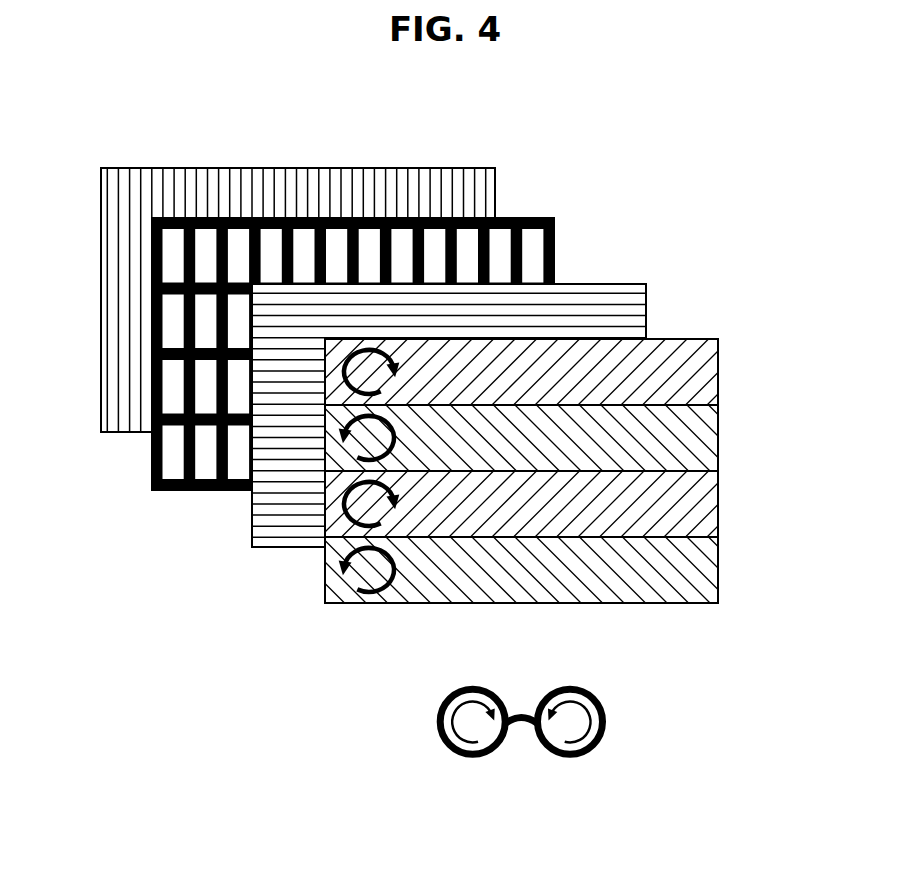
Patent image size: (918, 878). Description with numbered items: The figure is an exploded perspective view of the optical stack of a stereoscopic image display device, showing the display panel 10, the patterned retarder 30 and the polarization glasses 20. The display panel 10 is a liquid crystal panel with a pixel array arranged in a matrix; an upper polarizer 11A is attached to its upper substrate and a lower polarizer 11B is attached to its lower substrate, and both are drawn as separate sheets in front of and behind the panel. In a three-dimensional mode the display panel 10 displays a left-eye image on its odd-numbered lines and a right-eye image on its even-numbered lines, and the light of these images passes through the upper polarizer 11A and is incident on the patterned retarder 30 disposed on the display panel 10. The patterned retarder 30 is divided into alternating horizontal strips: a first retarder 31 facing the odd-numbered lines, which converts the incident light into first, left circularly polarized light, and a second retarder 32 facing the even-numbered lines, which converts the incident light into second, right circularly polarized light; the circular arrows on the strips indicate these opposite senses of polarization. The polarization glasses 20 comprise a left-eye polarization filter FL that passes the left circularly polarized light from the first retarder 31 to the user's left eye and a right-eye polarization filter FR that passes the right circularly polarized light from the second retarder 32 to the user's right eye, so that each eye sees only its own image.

The display panel 10 is at (538, 217).
The upper polarizer 11A is at (603, 282).
The lower polarizer 11B is at (477, 167).
The patterned retarder 30 is at (562, 439).
The first retarder 31 is at (708, 370).
The second retarder 32 is at (708, 437).
The polarization glasses 20 is at (569, 767).
The left-eye polarization filter FL is at (473, 760).
The right-eye polarization filter FR is at (567, 760).